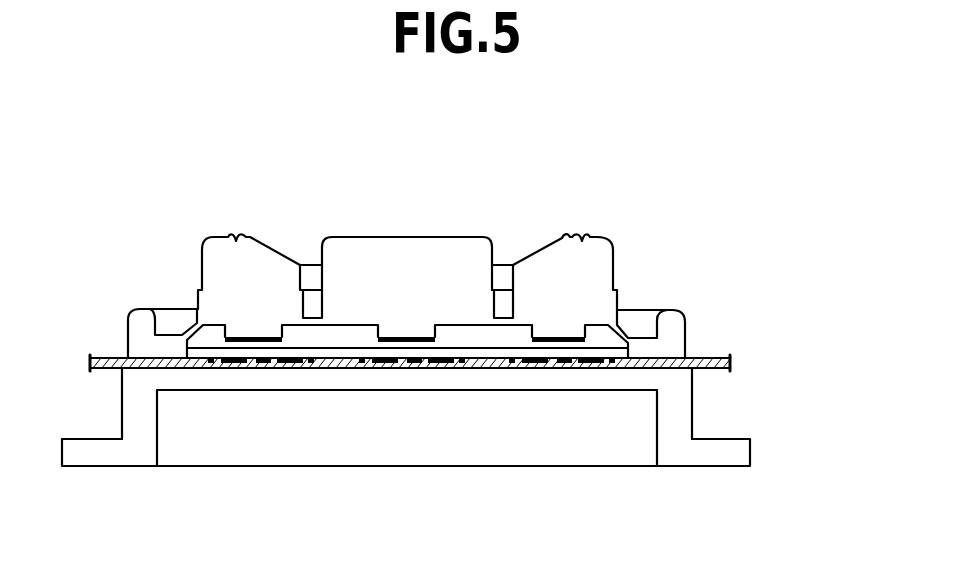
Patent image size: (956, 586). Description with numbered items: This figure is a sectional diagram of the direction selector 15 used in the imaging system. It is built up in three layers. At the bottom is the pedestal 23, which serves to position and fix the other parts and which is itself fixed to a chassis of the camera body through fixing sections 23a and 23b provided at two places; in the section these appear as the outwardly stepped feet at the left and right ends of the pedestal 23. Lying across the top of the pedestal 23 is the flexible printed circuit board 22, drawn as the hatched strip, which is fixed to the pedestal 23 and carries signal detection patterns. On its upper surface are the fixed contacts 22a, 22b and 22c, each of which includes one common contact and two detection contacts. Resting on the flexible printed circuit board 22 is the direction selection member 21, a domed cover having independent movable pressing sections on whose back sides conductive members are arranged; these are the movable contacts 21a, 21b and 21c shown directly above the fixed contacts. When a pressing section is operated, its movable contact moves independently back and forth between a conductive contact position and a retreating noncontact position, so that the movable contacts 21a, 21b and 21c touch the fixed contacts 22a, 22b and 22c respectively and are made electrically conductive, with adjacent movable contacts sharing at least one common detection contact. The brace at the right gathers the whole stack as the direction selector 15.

The direction selector 15 is at (820, 223).
The direction selection member 21 is at (173, 322).
The movable contact 21a is at (258, 336).
The movable contact 21b is at (559, 336).
The movable contact 21c is at (415, 336).
The flexible printed circuit board 22 is at (108, 355).
The fixed contact 22a is at (232, 368).
The fixed contact 22b is at (527, 368).
The fixed contact 22c is at (383, 368).
The pedestal 23 is at (135, 412).
The fixing section 23a is at (712, 457).
The fixing section 23b is at (93, 457).